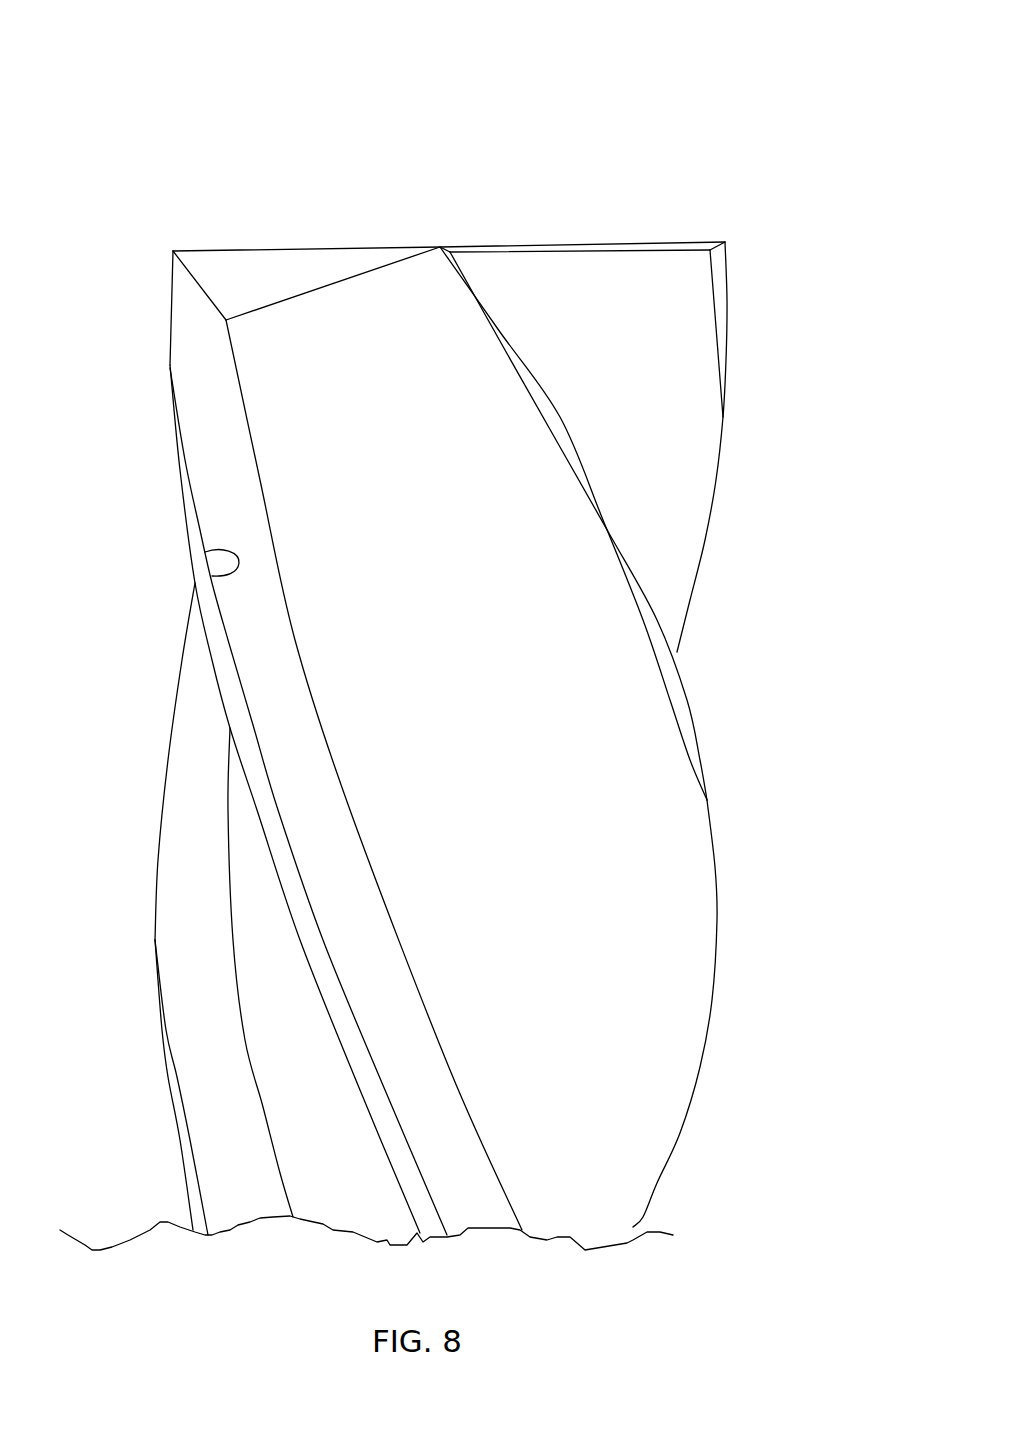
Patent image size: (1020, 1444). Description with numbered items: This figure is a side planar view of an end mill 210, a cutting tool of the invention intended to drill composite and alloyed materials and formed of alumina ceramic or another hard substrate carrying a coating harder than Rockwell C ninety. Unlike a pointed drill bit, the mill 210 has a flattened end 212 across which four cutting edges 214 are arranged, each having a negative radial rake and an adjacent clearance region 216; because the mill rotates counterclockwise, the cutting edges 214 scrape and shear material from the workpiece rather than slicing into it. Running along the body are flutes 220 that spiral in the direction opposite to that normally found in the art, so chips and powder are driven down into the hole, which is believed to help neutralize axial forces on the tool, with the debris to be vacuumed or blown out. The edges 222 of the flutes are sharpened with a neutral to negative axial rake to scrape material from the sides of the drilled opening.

The end mill 210 is at (758, 375).
The end 212 is at (475, 123).
The cutting edges 214 is at (197, 250).
The clearance region 216 is at (444, 252).
The flutes 220 is at (668, 410).
The edges of the flutes 222 is at (239, 565).